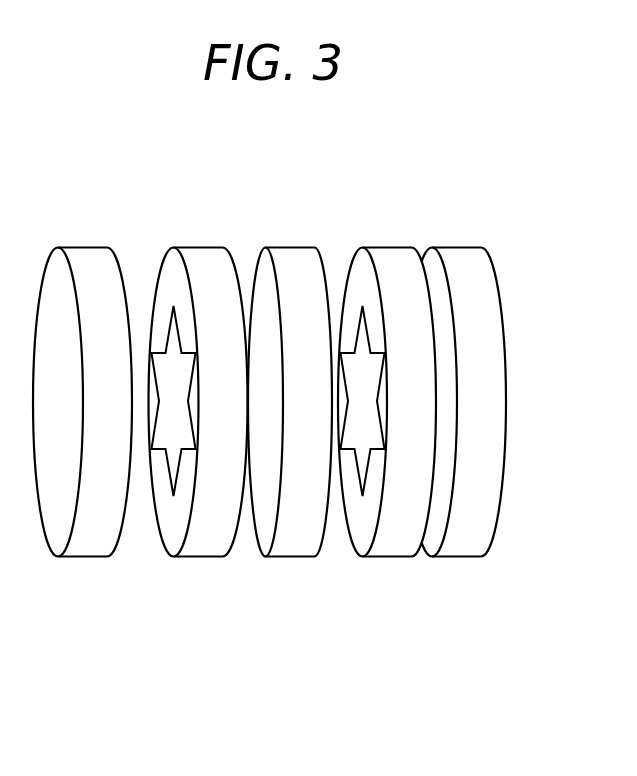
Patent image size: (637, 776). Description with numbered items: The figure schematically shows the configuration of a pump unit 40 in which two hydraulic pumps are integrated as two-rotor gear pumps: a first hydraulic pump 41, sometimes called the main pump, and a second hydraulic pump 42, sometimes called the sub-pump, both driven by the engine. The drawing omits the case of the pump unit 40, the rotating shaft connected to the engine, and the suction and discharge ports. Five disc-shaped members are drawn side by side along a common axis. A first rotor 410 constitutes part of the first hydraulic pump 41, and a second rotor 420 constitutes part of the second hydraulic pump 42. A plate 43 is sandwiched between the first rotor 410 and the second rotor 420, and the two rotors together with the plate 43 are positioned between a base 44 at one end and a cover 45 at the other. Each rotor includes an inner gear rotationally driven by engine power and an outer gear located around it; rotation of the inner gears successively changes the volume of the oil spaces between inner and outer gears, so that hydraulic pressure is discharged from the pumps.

The pump unit 40 is at (319, 220).
The first hydraulic pump 41 is at (200, 574).
The first rotor 410 is at (192, 470).
The second hydraulic pump 42 is at (388, 574).
The second rotor 420 is at (381, 470).
The plate 43 is at (285, 559).
The base 44 is at (84, 558).
The cover 45 is at (472, 559).